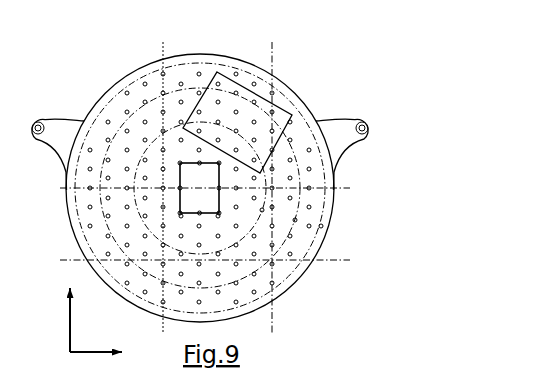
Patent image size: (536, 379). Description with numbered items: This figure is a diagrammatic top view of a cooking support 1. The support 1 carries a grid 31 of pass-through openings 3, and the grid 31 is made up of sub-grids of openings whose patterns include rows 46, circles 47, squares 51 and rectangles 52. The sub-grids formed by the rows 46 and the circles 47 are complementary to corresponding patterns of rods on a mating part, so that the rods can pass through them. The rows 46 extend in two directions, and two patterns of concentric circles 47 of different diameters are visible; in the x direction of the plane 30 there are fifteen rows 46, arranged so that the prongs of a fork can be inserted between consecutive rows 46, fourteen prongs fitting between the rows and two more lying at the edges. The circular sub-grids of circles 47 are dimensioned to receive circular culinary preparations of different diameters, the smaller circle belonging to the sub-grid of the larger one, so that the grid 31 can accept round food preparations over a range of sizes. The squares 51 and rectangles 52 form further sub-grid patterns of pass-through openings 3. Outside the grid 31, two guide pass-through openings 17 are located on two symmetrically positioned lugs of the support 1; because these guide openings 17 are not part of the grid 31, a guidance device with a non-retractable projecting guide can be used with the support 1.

The support 1 is at (311, 198).
The pass-through openings 3 is at (92, 211).
The grid of pass-through openings 31 is at (147, 290).
The guide pass-through openings 17 is at (39, 126).
The rows 46 is at (155, 260).
The circles 47 is at (262, 210).
The squares 51 is at (208, 213).
The rectangles 52 is at (267, 157).
The plane 30 is at (68, 325).